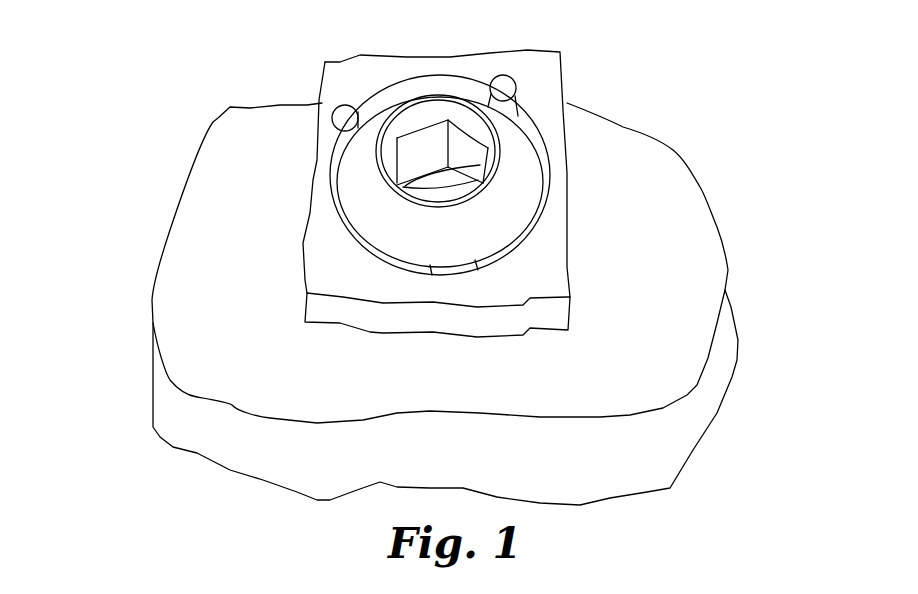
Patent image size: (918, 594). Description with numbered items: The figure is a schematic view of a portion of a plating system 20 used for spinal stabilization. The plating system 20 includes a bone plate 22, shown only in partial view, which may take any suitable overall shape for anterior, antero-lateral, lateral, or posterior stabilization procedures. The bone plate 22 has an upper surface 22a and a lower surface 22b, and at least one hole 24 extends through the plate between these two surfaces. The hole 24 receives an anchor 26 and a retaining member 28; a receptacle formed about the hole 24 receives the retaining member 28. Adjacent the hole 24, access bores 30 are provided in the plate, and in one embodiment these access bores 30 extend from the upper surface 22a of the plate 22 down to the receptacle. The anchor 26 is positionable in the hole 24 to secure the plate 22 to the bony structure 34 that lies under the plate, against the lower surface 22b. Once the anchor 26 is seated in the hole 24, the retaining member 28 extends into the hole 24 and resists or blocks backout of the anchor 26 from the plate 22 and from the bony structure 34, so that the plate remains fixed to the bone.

The plating system 20 is at (228, 94).
The bone plate 22 is at (332, 267).
The upper surface 22a is at (547, 110).
The lower surface 22b is at (340, 323).
The hole 24 is at (443, 183).
The anchor 26 is at (500, 218).
The retaining member 28 is at (548, 192).
The access bores 30 is at (343, 115).
The bony structure 34 is at (573, 458).